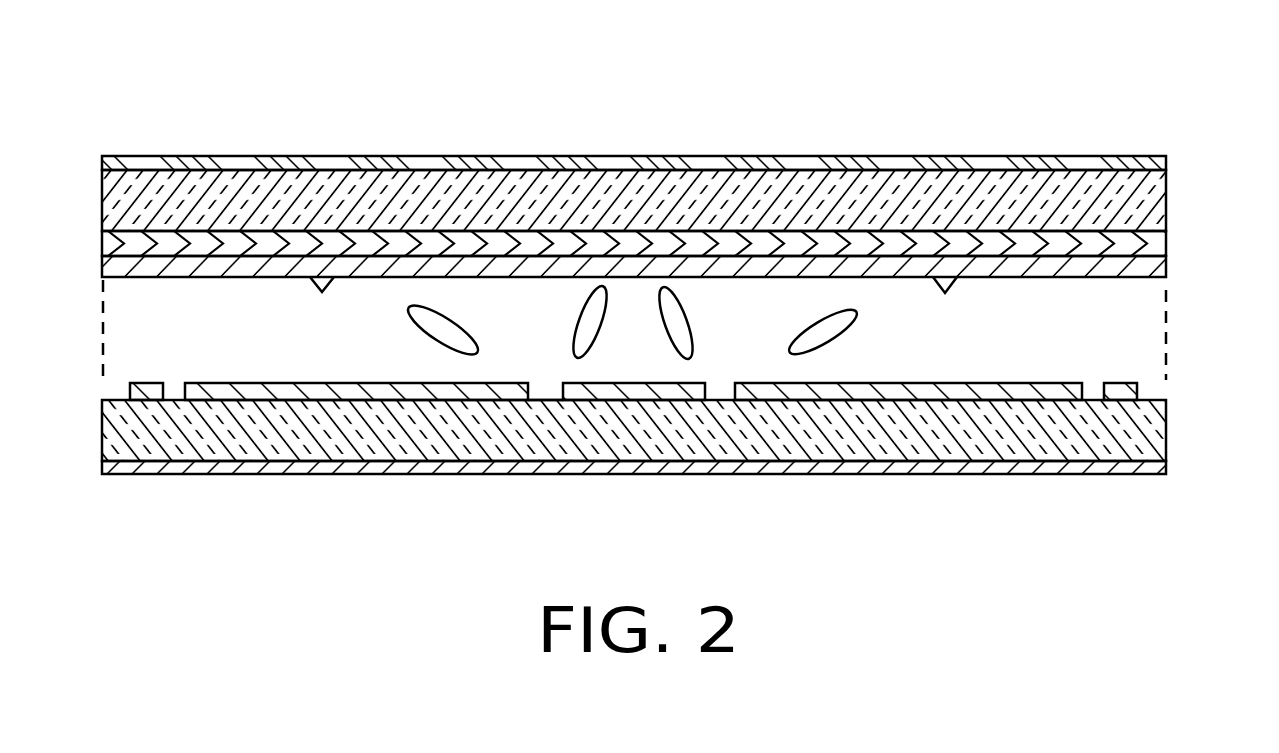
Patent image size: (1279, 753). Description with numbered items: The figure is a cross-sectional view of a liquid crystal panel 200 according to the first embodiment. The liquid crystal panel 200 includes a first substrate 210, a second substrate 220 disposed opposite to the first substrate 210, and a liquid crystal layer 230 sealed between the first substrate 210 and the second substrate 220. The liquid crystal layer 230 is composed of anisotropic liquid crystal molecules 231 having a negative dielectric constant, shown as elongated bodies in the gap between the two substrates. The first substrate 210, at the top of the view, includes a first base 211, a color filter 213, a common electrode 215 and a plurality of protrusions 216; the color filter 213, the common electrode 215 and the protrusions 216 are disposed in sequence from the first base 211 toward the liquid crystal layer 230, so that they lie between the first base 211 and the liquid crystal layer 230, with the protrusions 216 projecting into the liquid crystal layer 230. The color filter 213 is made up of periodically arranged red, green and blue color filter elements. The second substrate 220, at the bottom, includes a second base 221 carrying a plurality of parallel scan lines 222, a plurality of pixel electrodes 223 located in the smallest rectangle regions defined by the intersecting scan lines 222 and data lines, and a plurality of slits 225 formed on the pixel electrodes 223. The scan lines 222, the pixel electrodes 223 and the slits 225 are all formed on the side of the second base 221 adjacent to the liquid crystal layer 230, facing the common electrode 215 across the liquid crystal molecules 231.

The liquid crystal panel 200 is at (710, 68).
The first substrate 210 is at (1172, 157).
The first base 211 is at (153, 195).
The color filter 213 is at (227, 244).
The common electrode 215 is at (425, 265).
The protrusions 216 is at (323, 290).
The second substrate 220 is at (1172, 388).
The second base 221 is at (285, 437).
The scan lines 222 is at (147, 399).
The pixel electrodes 223 is at (363, 392).
The slits 225 is at (545, 392).
The liquid crystal layer 230 is at (1172, 288).
The liquid crystal molecules 231 is at (823, 330).